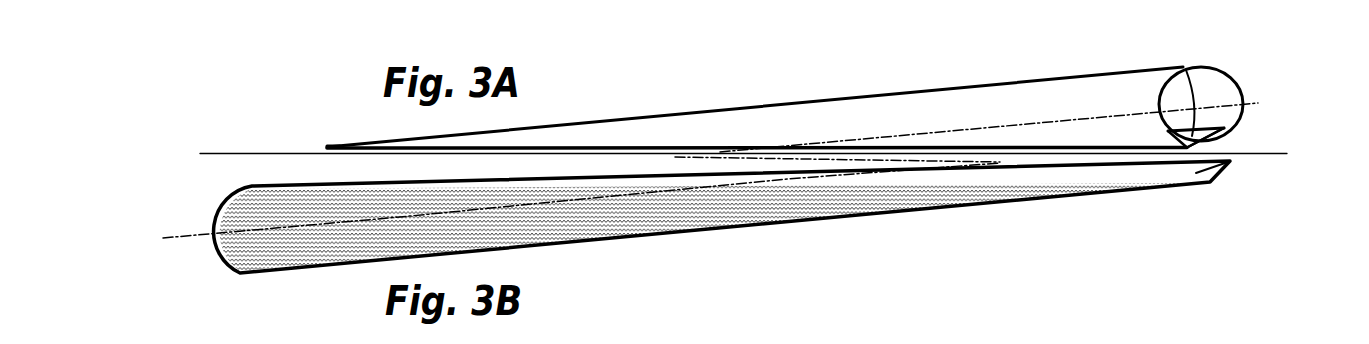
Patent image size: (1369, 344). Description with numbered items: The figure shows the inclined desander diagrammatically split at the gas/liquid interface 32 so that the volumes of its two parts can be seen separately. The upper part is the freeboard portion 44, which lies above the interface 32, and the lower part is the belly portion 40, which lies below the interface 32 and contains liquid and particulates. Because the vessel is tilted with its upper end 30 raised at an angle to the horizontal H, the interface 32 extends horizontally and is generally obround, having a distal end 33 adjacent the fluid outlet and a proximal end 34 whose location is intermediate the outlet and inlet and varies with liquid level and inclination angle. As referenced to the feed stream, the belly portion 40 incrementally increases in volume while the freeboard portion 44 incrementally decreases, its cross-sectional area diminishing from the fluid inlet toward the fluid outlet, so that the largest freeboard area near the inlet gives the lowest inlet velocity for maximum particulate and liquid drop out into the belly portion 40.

In FIG. 3A, the horizontal H is at (240, 153).
In FIG. 3B, the upper end 30 is at (1078, 172).
In FIG. 3A, the gas/liquid interface 32 is at (1195, 133).
In FIG. 3A, the distal end 33 is at (332, 186).
In FIG. 3A, the proximal end 34 is at (1217, 140).
In FIG. 3B, the belly portion 40 is at (688, 190).
In FIG. 3A, the freeboard portion 44 is at (1040, 125).